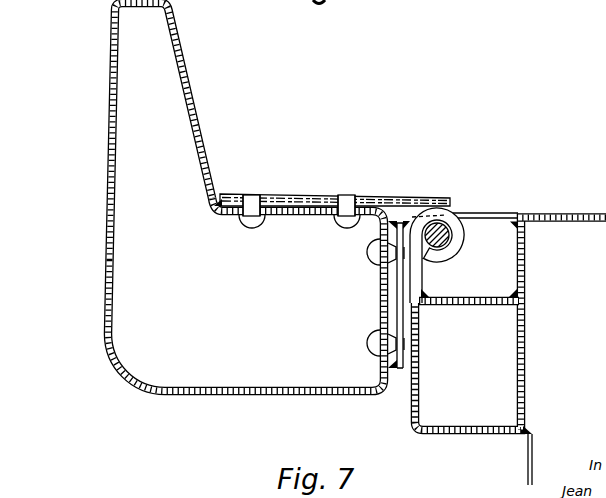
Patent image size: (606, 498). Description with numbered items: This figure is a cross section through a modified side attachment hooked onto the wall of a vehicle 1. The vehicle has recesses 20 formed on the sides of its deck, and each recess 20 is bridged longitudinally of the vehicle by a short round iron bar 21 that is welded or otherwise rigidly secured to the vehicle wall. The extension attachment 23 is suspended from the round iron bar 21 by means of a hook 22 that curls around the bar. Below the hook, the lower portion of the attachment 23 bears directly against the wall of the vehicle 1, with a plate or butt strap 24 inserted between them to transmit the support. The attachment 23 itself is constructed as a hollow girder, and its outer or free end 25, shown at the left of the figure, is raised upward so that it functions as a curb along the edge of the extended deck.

The seat support box 1 is at (500, 386).
The recess 20 is at (502, 272).
The round iron bar 21 is at (448, 226).
The hook 22 is at (458, 243).
The extension attachment 23 is at (222, 370).
The plate or butt strap 24 is at (403, 388).
The outer or free end 25 is at (130, 124).